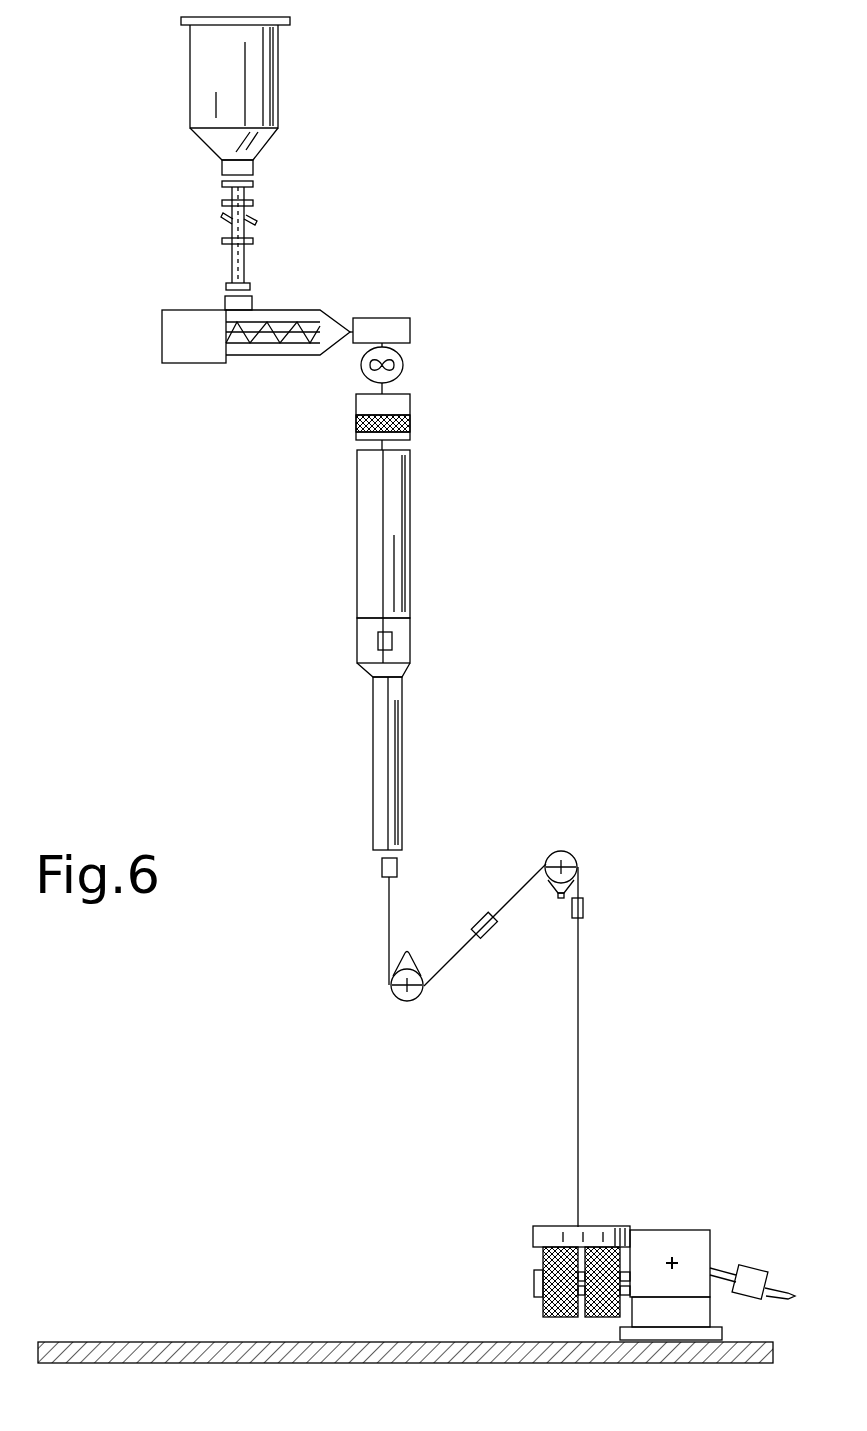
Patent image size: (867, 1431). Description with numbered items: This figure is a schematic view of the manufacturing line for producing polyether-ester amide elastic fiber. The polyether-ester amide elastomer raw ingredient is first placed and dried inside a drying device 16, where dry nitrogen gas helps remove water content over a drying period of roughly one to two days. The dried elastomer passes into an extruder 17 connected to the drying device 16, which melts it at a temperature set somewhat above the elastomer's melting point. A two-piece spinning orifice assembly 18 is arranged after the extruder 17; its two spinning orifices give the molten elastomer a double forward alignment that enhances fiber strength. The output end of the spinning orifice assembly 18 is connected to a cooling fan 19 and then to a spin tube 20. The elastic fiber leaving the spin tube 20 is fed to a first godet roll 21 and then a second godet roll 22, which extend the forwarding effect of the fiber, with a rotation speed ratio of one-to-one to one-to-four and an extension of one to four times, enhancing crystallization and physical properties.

The drying device 16 is at (290, 80).
The extruder 17 is at (287, 300).
The two-piece spinning orifice assembly 18 is at (418, 418).
The cooling fan 19 is at (421, 543).
The spin tube 20 is at (413, 755).
The first godet roll 21 is at (395, 1007).
The second godet roll 22 is at (588, 854).